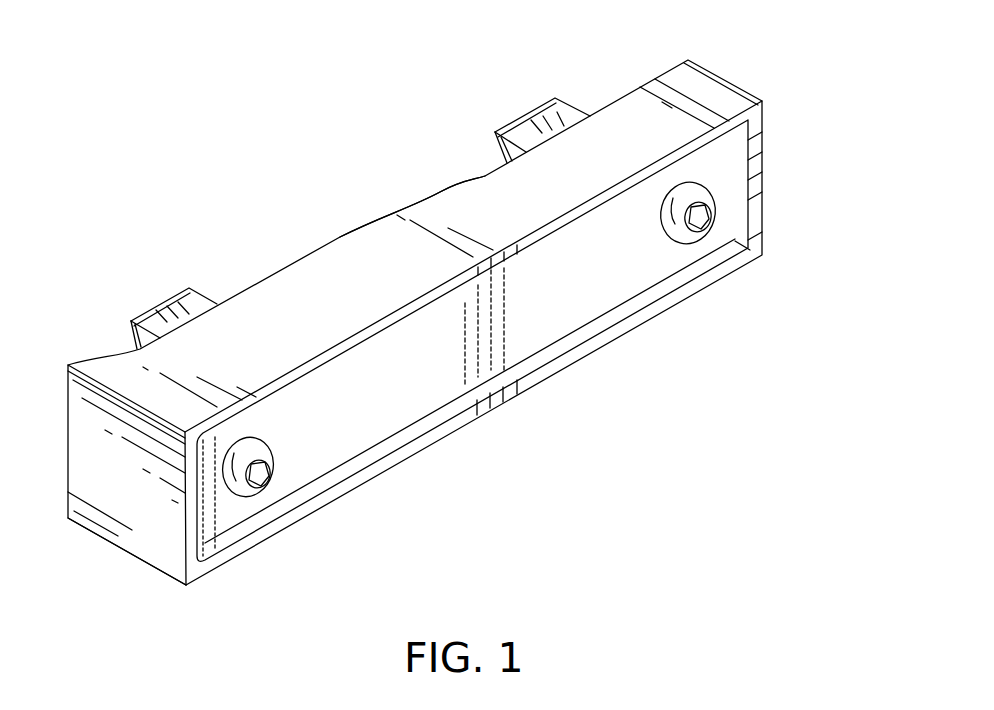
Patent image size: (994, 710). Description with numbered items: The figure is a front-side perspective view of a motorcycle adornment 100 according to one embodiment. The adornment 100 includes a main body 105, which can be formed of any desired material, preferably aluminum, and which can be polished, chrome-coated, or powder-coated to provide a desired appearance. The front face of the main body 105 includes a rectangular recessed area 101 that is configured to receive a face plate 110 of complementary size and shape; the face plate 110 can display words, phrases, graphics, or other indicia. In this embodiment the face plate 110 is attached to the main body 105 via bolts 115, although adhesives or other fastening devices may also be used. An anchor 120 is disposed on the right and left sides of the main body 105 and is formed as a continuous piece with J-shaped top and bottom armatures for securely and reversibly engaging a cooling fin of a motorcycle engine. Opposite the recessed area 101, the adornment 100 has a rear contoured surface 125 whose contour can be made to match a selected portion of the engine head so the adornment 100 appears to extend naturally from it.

The motorcycle adornment 100 is at (740, 330).
The rectangular recessed area 101 is at (538, 360).
The main body 105 is at (152, 535).
The face plate 110 is at (368, 388).
The bolts 115 is at (722, 209).
The anchor 120 is at (168, 284).
The rear contoured surface 125 is at (360, 228).